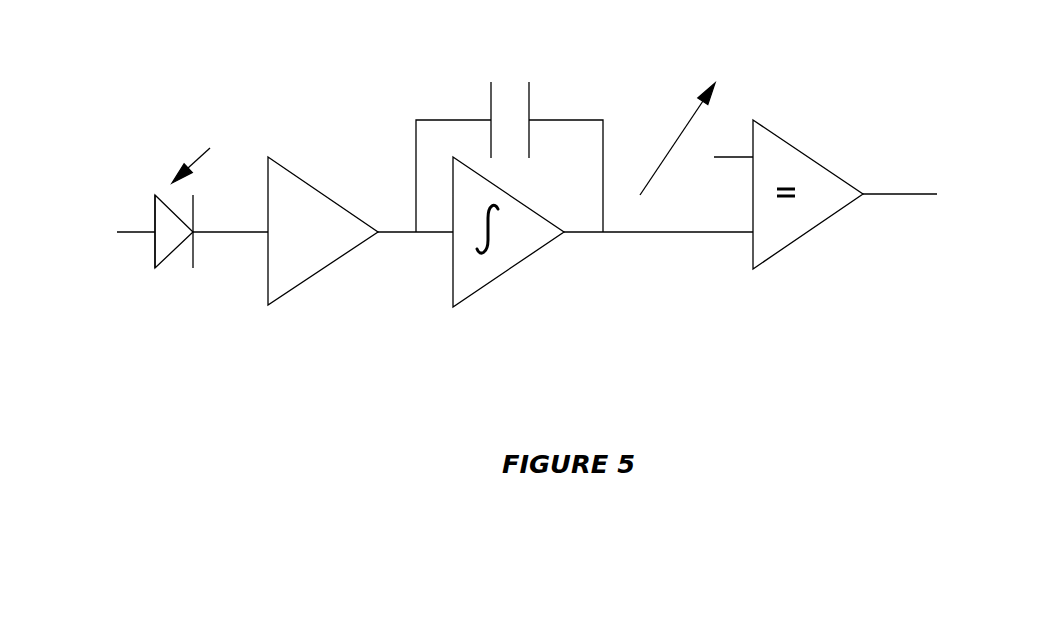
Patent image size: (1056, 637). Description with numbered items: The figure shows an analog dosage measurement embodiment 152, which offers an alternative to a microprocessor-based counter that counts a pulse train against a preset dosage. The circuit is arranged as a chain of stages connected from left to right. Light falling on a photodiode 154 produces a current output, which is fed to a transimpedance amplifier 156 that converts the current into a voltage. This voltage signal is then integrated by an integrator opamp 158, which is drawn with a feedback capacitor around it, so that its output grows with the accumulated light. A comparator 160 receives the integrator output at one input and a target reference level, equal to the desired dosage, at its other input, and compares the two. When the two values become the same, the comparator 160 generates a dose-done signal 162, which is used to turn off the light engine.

The analog dosage measurement embodiment 152 is at (929, 415).
The photodiode 154 is at (176, 240).
The transimpedance amplifier 156 is at (323, 246).
The integrator opamp 158 is at (509, 194).
The comparator 160 is at (741, 192).
The signal 162 is at (984, 214).